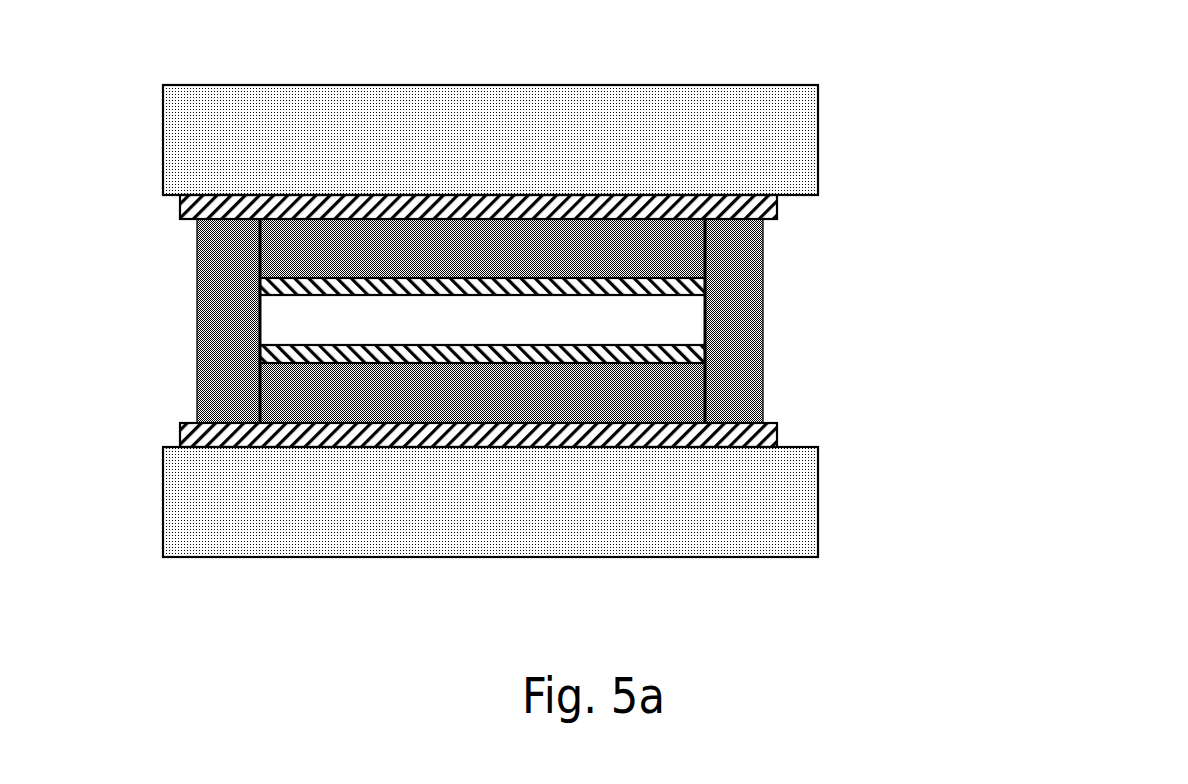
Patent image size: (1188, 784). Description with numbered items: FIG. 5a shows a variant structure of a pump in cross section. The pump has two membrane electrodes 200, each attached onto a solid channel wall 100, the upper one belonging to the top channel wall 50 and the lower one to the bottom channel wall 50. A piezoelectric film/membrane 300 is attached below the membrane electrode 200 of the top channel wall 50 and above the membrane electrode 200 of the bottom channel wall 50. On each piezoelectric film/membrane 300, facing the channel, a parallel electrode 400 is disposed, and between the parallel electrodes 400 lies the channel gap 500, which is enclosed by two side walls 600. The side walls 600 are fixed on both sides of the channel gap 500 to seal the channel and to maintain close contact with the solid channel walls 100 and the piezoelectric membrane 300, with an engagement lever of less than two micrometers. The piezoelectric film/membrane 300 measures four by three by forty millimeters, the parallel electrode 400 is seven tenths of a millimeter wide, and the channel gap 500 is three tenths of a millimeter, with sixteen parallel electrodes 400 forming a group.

The top/bottom channel wall 50 is at (850, 82).
The solid channel wall 100 is at (825, 143).
The membrane electrode 200 is at (780, 206).
The piezoelectric film/membrane 300 is at (660, 240).
The parallel electrode 400 is at (705, 294).
The channel gap 500 is at (408, 316).
The side wall 600 is at (703, 378).